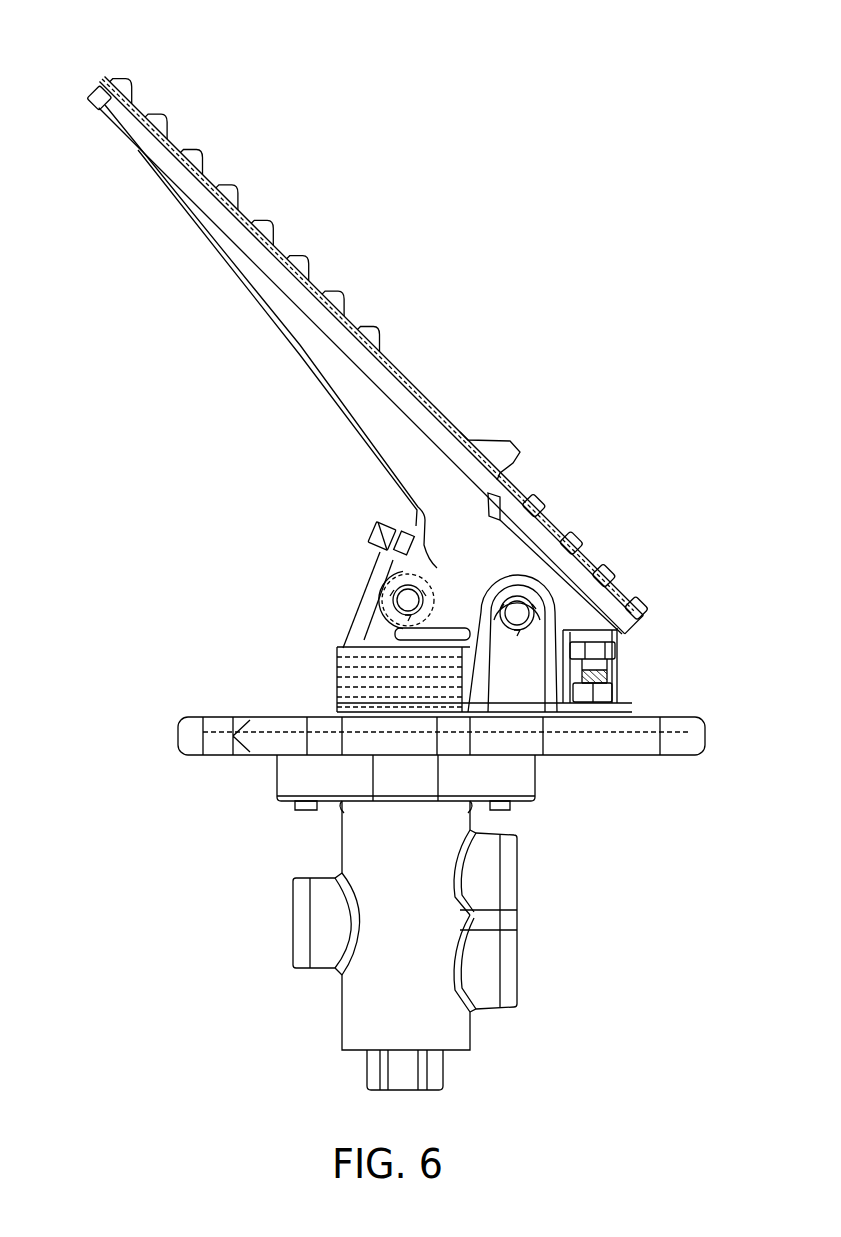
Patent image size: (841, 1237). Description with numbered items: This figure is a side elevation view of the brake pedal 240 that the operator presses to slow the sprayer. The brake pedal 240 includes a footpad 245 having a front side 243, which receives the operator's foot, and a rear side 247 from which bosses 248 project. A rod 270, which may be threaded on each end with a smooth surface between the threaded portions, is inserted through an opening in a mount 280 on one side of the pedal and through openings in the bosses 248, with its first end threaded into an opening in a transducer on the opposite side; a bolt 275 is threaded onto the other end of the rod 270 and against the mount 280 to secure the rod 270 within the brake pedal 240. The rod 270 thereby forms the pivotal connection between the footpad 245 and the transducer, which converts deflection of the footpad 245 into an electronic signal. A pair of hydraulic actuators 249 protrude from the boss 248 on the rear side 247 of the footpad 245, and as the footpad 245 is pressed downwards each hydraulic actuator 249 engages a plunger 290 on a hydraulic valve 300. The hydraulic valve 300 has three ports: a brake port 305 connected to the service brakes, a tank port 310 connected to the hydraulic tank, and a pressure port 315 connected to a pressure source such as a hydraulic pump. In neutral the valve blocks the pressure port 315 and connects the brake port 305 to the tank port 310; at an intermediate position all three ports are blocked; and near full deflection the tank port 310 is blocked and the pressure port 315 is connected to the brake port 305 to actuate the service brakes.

The brake pedal 240 is at (507, 262).
The front side 243 is at (166, 148).
The footpad 245 is at (126, 85).
The rear side 247 is at (142, 152).
The bosses 248 is at (375, 445).
The hydraulic actuators 249 is at (405, 577).
The rod 270 is at (520, 616).
The bolt 275 is at (530, 606).
The mount 280 is at (518, 682).
The plunger 290 is at (333, 660).
The hydraulic valve 300 is at (478, 1037).
The brake port 305 is at (297, 922).
The tank port 310 is at (520, 967).
The pressure port 315 is at (520, 873).